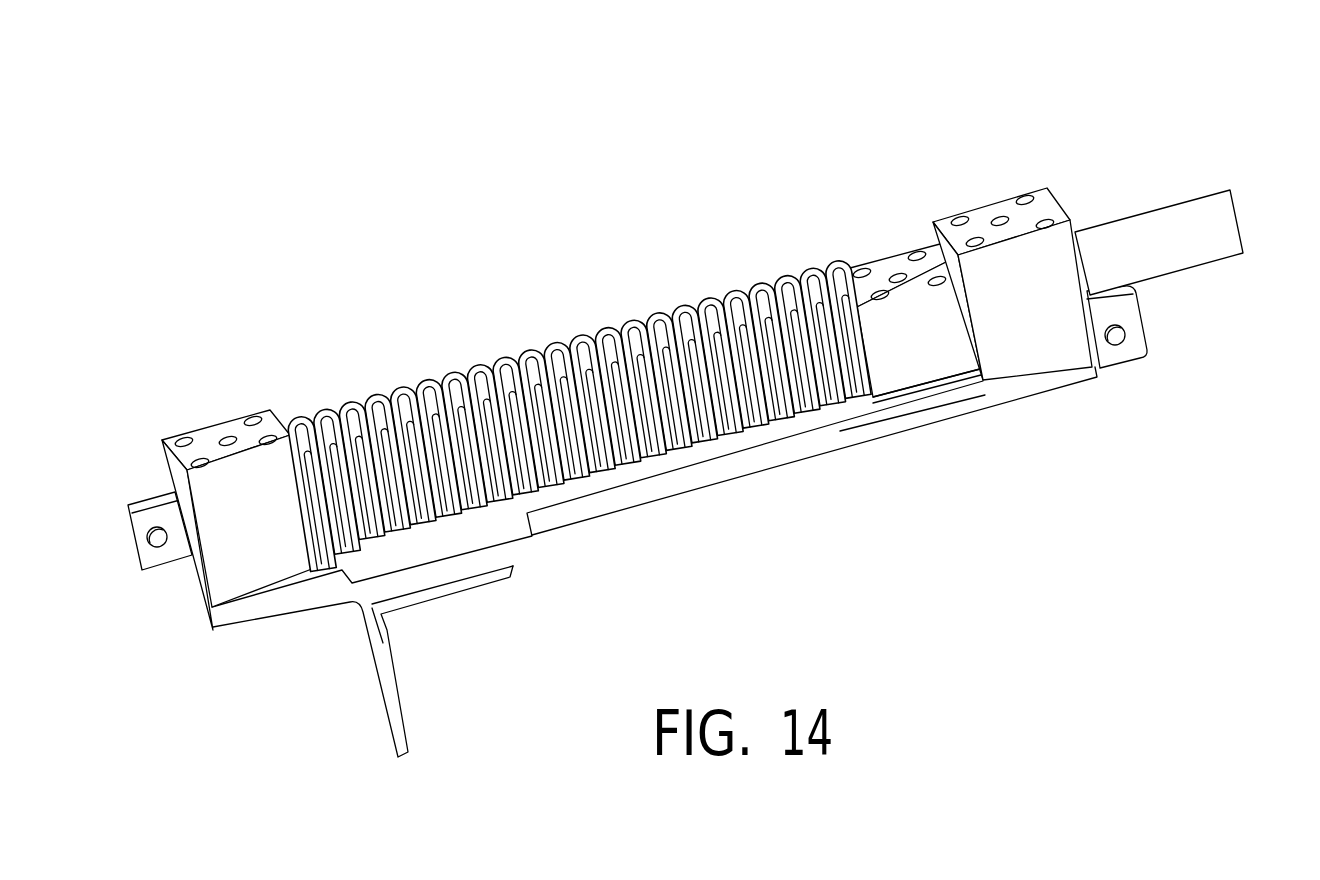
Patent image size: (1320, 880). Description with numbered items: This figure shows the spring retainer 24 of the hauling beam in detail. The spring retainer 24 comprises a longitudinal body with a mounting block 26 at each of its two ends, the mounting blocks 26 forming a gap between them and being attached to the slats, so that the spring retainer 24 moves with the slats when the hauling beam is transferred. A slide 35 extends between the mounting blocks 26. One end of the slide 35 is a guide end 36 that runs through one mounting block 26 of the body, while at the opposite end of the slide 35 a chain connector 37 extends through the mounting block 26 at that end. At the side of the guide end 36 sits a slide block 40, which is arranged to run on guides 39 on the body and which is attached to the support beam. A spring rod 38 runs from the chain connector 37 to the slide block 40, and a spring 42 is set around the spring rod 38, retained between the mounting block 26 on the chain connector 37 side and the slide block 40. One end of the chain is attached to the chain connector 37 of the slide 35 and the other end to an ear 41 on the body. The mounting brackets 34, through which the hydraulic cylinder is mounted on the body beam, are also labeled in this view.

The spring retainer 24 is at (687, 495).
The mounting block 26 is at (210, 438).
The mounting brackets 34 is at (462, 374).
The slide 35 is at (887, 244).
The guide end 36 is at (1133, 213).
The chain connector 37 is at (151, 572).
The spring rod 38 is at (348, 434).
The guides 39 is at (880, 409).
The slide block 40 is at (940, 354).
The ear 41 is at (1123, 375).
The spring 42 is at (566, 478).